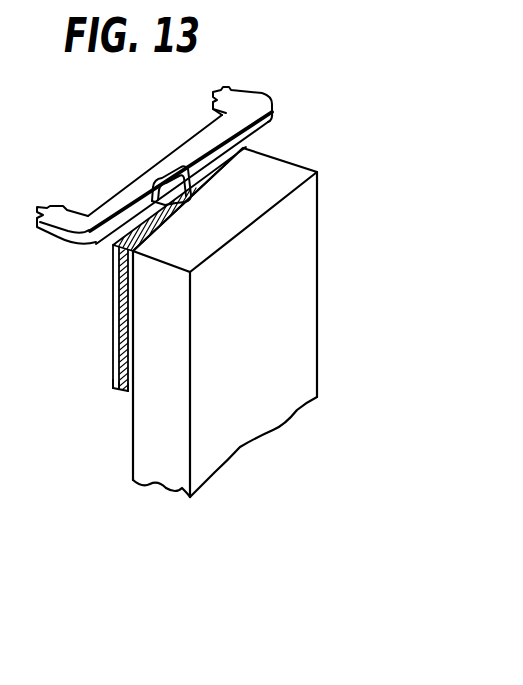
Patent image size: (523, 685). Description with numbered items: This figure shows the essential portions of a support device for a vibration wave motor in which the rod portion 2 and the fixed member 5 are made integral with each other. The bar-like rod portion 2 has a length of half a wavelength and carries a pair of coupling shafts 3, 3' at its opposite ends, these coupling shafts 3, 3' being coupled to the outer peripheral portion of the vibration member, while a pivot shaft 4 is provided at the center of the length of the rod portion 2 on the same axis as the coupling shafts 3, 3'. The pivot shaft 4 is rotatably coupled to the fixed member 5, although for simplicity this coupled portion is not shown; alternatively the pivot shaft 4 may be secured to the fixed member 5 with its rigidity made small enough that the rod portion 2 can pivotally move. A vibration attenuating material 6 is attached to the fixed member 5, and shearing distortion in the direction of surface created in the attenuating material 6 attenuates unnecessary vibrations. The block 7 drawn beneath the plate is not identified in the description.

The rod portion 2 is at (132, 193).
The coupling shaft 3 is at (60, 240).
The coupling shaft 3' is at (247, 89).
The pivot shaft 4 is at (150, 190).
The fixed member 5 is at (115, 306).
The attenuating material 6 is at (123, 393).
The block 7 is at (156, 482).